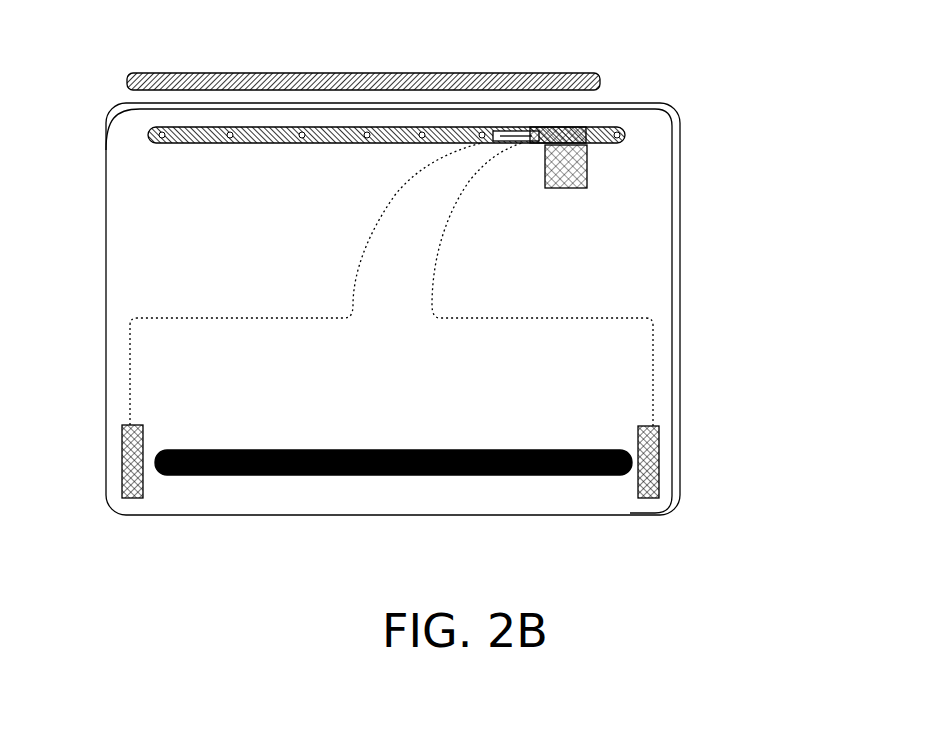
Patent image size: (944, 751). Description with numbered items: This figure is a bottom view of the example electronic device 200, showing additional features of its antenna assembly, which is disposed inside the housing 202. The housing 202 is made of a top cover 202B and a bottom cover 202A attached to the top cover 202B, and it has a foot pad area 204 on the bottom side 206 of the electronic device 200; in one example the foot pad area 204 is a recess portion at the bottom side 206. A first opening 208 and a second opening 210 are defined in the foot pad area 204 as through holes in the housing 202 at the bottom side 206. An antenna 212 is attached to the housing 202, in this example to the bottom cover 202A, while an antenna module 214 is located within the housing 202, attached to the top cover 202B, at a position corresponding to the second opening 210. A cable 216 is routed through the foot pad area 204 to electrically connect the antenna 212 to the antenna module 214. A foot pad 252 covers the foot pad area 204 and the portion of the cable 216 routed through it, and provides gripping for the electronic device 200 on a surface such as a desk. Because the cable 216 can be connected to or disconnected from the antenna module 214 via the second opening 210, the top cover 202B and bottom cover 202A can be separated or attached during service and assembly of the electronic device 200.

The electronic device 200 is at (624, 578).
The housing 202 is at (828, 195).
The bottom cover 202A is at (680, 211).
The top cover 202B is at (672, 246).
The foot pad area 204 is at (188, 146).
The bottom side 206 is at (128, 250).
The first opening 208 is at (485, 112).
The second opening 210 is at (560, 110).
The antenna 212 is at (658, 463).
The antenna module 214 is at (590, 163).
The cable 216 is at (653, 358).
The foot pad 252 is at (611, 110).